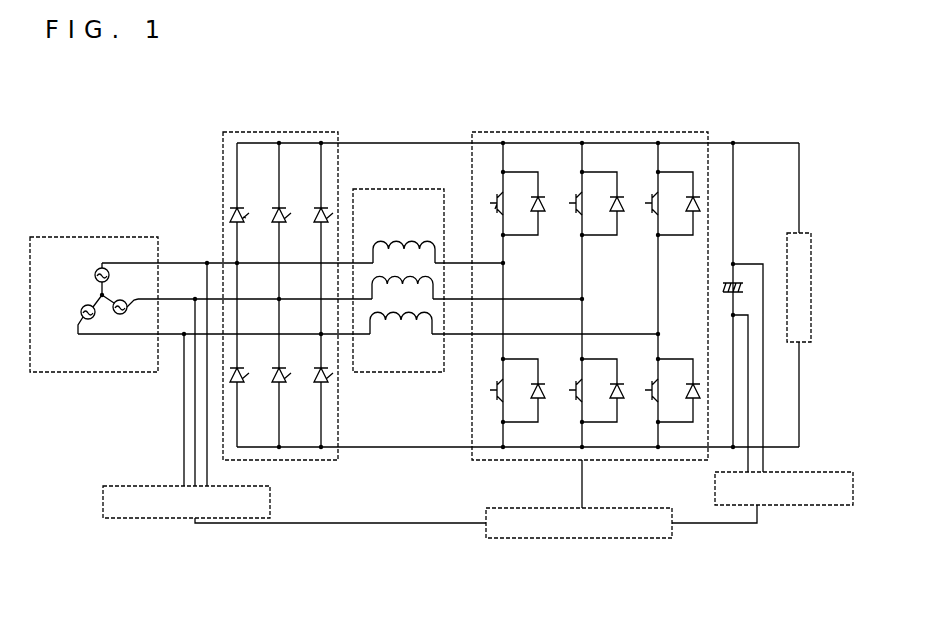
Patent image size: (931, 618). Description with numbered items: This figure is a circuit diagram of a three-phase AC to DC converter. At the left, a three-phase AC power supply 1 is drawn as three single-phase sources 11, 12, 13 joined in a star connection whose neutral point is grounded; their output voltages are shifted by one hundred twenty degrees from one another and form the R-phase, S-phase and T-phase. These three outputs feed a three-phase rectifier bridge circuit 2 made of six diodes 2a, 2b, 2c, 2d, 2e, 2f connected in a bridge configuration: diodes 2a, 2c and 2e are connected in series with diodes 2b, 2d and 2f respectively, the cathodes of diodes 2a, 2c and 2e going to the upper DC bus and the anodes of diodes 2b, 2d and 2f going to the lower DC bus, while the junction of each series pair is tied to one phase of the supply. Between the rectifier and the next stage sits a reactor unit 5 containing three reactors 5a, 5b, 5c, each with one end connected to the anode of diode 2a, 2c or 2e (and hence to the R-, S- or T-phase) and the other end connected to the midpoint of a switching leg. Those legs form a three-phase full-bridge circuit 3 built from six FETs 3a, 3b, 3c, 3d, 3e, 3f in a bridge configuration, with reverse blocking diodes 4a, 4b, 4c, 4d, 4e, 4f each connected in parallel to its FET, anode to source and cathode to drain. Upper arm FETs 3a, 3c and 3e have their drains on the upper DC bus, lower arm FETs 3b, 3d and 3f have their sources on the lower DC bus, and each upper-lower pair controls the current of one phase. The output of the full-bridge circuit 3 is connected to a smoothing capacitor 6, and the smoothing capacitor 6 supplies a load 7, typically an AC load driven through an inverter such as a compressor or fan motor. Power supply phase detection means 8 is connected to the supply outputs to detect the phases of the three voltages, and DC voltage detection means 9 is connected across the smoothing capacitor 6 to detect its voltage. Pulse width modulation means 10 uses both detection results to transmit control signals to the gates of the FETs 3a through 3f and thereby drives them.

The three-phase AC power supply 1 is at (78, 237).
The AC power source phase 11 is at (82, 320).
The AC power source phase 12 is at (95, 277).
The AC power source phase 13 is at (125, 302).
The three-phase rectifier bridge circuit 2 is at (334, 132).
The diode 2a is at (232, 210).
The diode 2b is at (243, 386).
The diode 2c is at (274, 210).
The diode 2d is at (285, 386).
The diode 2e is at (317, 210).
The diode 2f is at (327, 386).
The three-phase full-bridge circuit 3 is at (658, 132).
The FET 3a is at (496, 200).
The FET 3b is at (496, 387).
The FET 3c is at (574, 200).
The FET 3d is at (573, 387).
The FET 3e is at (650, 200).
The FET 3f is at (649, 387).
The reverse blocking diode 4a is at (541, 213).
The reverse blocking diode 4b is at (541, 400).
The reverse blocking diode 4c is at (620, 213).
The reverse blocking diode 4d is at (620, 400).
The reverse blocking diode 4e is at (696, 213).
The reverse blocking diode 4f is at (696, 400).
The reactor unit 5 is at (376, 189).
The reactor 5a is at (404, 243).
The reactor 5b is at (401, 279).
The reactor 5c is at (400, 315).
The smoothing capacitor 6 is at (742, 266).
The load 7 is at (811, 226).
The power supply phase detection means 8 is at (165, 486).
The DC voltage detection means 9 is at (775, 507).
The pulse width modulation means 10 is at (506, 542).